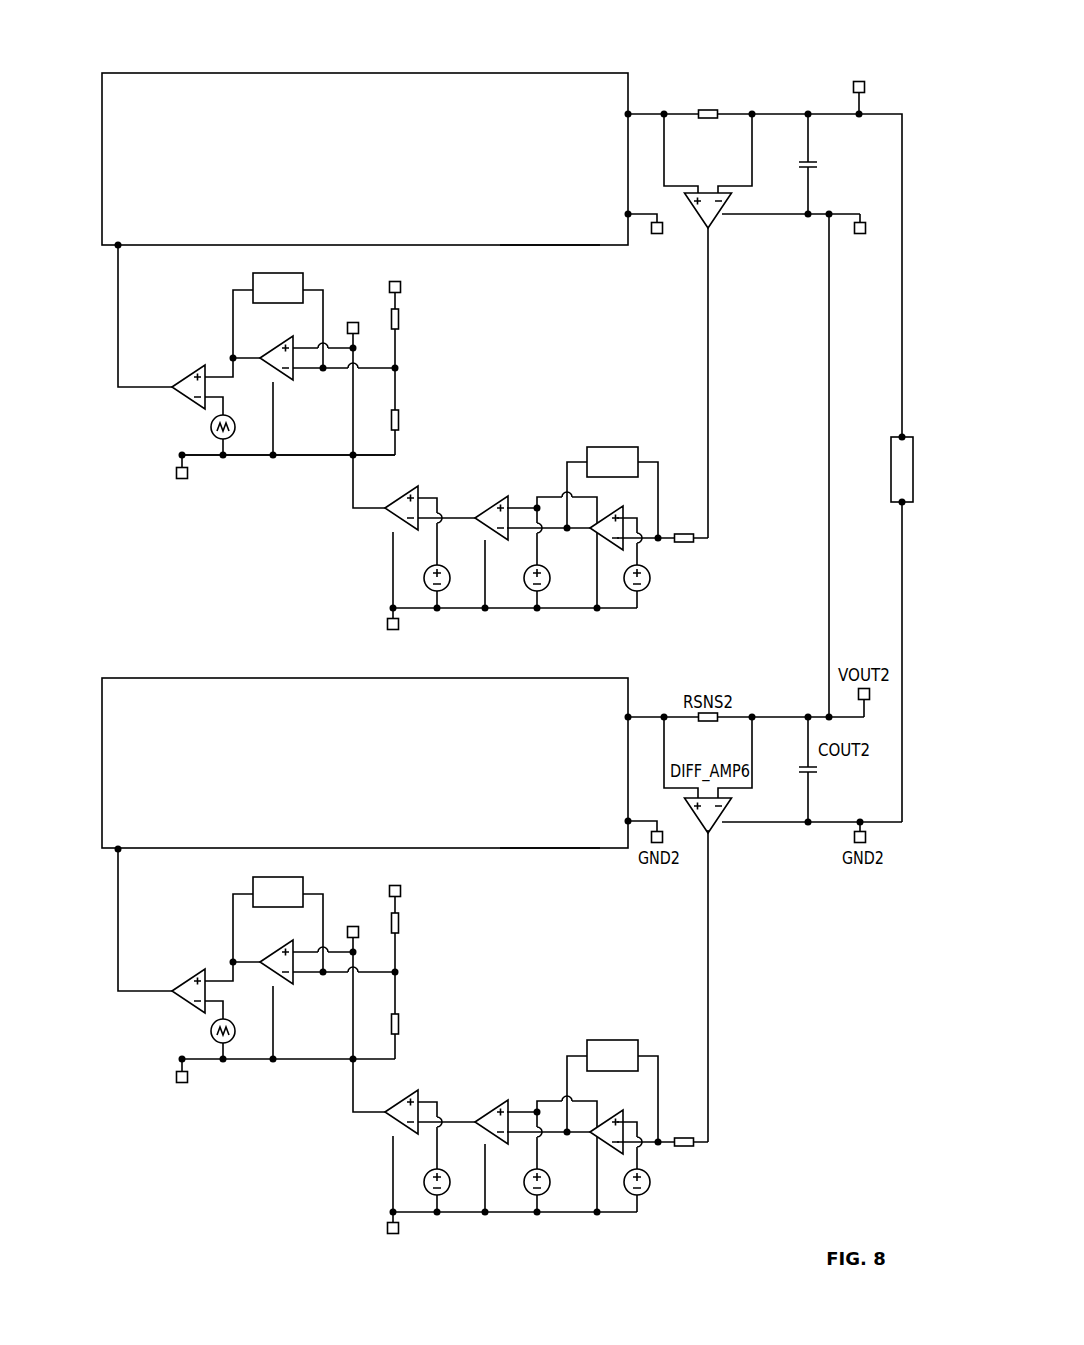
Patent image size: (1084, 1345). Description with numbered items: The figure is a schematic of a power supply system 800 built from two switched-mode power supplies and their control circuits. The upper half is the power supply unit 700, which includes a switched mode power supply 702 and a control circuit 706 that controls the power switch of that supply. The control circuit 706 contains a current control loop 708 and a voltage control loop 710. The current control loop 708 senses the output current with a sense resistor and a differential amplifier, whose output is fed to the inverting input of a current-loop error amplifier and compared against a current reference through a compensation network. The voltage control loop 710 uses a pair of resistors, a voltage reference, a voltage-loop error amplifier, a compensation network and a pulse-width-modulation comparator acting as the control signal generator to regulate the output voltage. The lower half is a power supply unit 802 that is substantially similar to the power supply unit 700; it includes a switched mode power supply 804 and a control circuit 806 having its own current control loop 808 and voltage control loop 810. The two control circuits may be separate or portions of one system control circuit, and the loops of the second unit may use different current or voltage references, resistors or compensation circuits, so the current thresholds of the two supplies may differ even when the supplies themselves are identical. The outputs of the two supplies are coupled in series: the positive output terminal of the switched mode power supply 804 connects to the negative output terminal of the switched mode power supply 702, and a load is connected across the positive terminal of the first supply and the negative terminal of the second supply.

The power supply unit 700 is at (620, 66).
The switched mode power supply 702 is at (538, 248).
The control circuit 706 is at (115, 292).
The current control loop 708 is at (557, 411).
The voltage control loop 710 is at (266, 504).
The power supply system 800 is at (675, 56).
The power supply unit 802 is at (648, 670).
The switched mode power supply 804 is at (567, 851).
The control circuit 806 is at (762, 908).
The current control loop 808 is at (541, 1015).
The voltage control loop 810 is at (266, 1108).